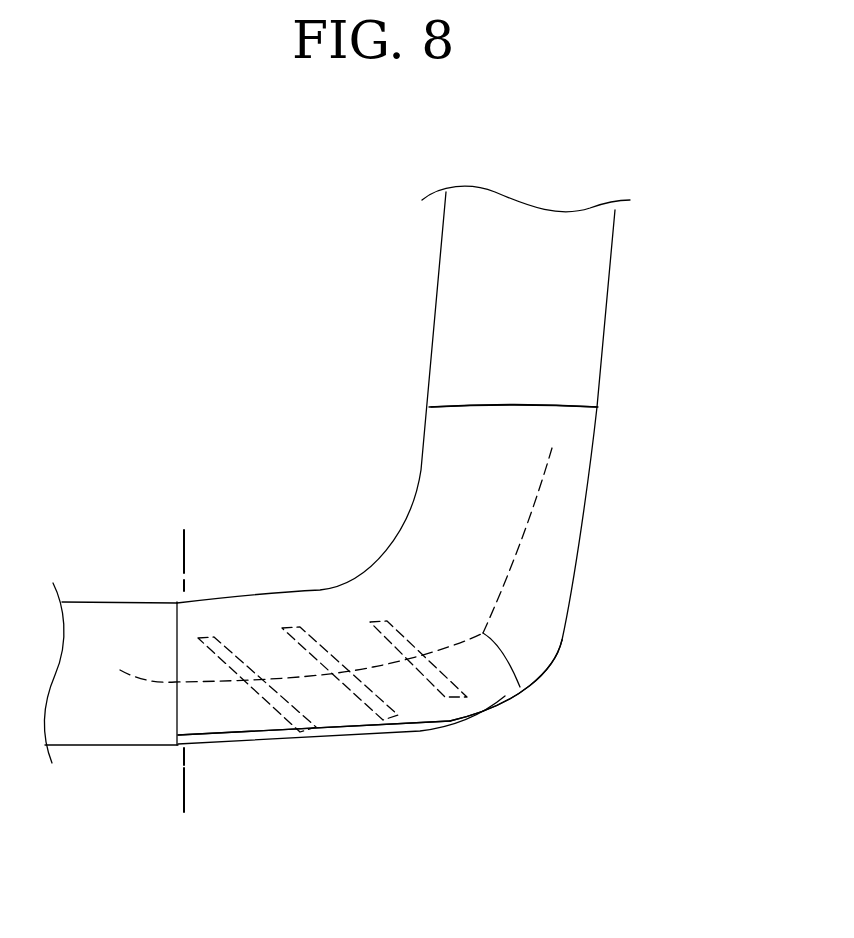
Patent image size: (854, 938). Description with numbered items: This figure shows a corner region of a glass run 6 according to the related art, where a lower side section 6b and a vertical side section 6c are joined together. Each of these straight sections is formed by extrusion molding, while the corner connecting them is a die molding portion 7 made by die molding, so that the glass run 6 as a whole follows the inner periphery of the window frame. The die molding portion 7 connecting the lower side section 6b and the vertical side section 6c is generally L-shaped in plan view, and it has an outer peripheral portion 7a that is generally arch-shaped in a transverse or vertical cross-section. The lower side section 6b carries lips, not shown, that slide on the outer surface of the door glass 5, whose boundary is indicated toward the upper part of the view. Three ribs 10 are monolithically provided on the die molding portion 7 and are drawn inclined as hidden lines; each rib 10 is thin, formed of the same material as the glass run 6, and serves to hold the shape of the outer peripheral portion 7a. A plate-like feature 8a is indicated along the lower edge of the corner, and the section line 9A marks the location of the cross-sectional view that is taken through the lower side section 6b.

The door glass 5 is at (398, 365).
The glass run 6 is at (435, 280).
The lower side section 6b is at (97, 602).
The vertical side section 6c is at (568, 311).
The die molding portion 7 is at (580, 602).
The outer peripheral portion 7a is at (538, 637).
The plate 8a is at (523, 690).
The section line 9A is at (182, 552).
The rib 10 is at (280, 705).